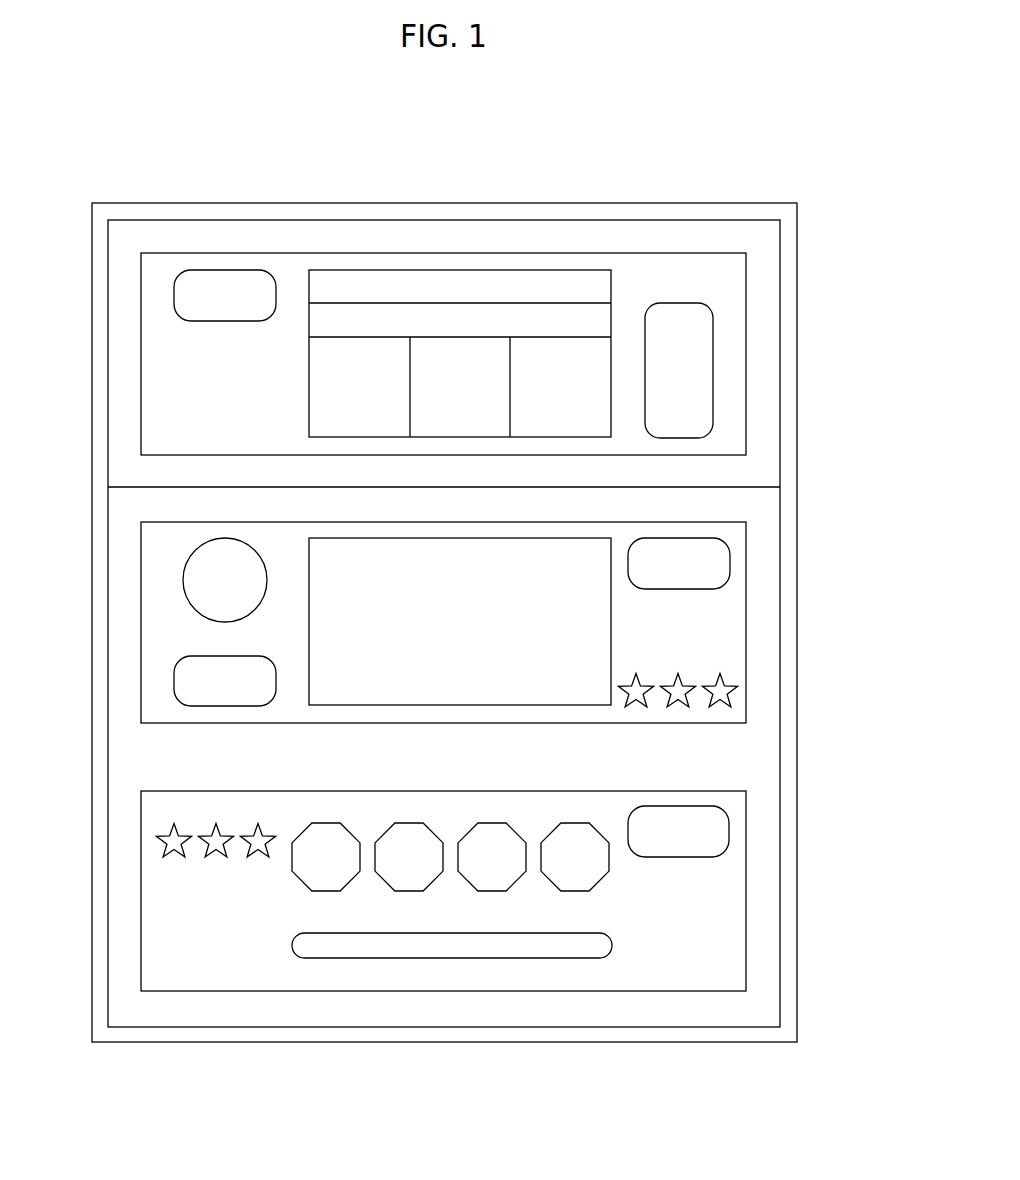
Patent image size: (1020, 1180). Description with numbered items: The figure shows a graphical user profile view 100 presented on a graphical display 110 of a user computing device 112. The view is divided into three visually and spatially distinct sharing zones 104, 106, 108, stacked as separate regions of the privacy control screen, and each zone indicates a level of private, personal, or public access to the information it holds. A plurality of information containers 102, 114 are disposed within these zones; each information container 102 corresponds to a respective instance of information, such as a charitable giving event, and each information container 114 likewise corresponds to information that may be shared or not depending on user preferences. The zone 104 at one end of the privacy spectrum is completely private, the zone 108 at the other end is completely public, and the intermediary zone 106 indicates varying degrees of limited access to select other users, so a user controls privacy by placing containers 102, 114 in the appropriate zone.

The graphical user profile view 100 is at (817, 165).
The information container 102 is at (263, 272).
The sharing zone 104 is at (812, 253).
The sharing zone 106 is at (462, 622).
The sharing zone 108 is at (812, 791).
The graphical display 110 is at (665, 1027).
The user computing device 112 is at (135, 203).
The information container 114 is at (182, 583).